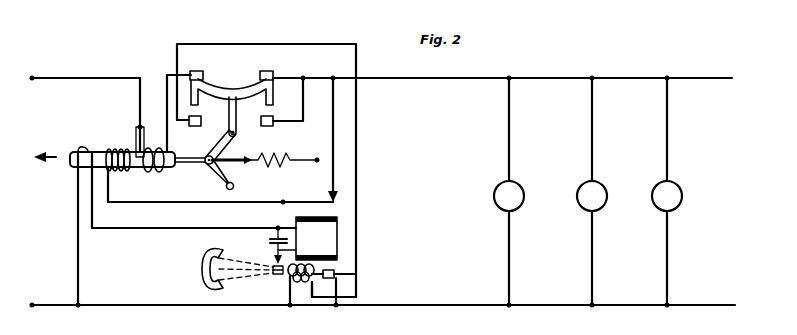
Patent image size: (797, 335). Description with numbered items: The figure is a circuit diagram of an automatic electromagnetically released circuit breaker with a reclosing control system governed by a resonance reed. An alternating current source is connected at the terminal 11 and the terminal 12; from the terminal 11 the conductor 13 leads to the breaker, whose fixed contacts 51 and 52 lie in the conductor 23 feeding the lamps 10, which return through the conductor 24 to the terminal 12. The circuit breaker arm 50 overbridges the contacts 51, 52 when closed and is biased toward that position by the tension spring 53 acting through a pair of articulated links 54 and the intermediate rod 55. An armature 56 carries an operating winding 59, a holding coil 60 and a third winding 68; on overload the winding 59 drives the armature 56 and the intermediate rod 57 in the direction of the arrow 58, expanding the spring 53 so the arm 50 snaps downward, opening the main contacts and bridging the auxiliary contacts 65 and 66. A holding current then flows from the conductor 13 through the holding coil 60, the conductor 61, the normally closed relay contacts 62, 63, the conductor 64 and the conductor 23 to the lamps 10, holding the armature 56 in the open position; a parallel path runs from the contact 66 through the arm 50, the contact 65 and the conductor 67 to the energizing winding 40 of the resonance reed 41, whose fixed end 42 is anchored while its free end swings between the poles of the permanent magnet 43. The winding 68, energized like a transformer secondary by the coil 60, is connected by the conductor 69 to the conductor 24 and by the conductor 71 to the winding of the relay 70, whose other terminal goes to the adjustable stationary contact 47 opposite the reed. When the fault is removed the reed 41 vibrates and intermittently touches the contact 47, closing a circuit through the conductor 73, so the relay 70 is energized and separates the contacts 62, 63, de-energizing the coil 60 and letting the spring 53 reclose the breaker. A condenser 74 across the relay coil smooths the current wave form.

The lamps 10 is at (594, 192).
The terminal 11 is at (40, 70).
The terminal 12 is at (63, 296).
The conductor 13 is at (102, 76).
The conductor 23 is at (495, 76).
The conductor 24 is at (444, 304).
The energizing winding 40 is at (301, 286).
The resonance reed 41 is at (270, 298).
The fixed end 42 is at (334, 289).
The permanent magnet 43 is at (202, 270).
The adjustable stationary contact 47 is at (274, 258).
The circuit breaker arm 50 is at (229, 89).
The fixed contact 51 is at (196, 71).
The fixed contact 52 is at (270, 71).
The tension spring 53 is at (260, 163).
The articulated links 54 is at (215, 174).
The intermediate rod 55 is at (235, 103).
The armature 56 is at (100, 154).
The intermediate rod 57 is at (197, 158).
The arrow 58 is at (47, 150).
The operating winding 59 is at (150, 171).
The holding coil 60 is at (113, 170).
The conductor 61 is at (208, 214).
The relay contact 62 is at (336, 207).
The relay contact 63 is at (344, 190).
The conductor 64 is at (334, 144).
The auxiliary contact 65 is at (190, 128).
The auxiliary contact 66 is at (282, 109).
The conductor 67 is at (286, 46).
The third winding 68 is at (84, 146).
The conductor 69 is at (78, 256).
The relay 70 is at (338, 238).
The conductor 71 is at (194, 230).
The conductor 73 is at (335, 286).
The condenser 74 is at (268, 238).